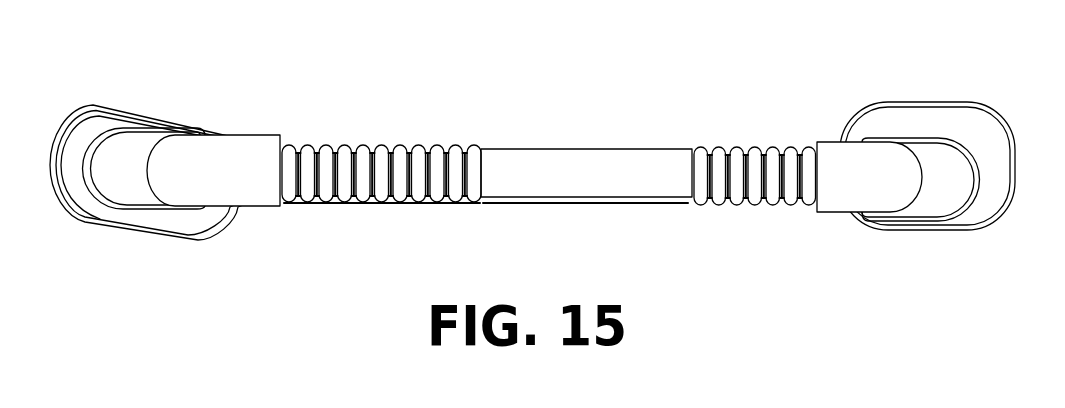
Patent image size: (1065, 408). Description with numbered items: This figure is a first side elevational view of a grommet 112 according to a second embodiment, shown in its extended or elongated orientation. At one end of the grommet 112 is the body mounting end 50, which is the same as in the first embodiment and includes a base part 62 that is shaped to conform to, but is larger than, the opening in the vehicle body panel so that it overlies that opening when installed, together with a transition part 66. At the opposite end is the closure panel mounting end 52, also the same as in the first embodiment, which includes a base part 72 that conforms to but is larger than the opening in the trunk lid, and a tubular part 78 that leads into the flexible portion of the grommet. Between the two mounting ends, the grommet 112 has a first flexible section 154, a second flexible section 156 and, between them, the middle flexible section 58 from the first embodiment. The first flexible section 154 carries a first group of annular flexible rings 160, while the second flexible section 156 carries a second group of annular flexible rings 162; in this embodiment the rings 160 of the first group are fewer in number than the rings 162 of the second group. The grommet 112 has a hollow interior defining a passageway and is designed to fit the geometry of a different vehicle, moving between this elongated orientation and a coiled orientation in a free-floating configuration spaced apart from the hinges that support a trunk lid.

The grommet 112 is at (546, 154).
The body mounting end 50 is at (885, 102).
The closure panel mounting end 52 is at (103, 105).
The middle flexible section 58 is at (533, 157).
The base part 62 is at (973, 118).
The transition part 66 is at (953, 188).
The base part 72 is at (102, 123).
The tubular part 78 is at (233, 147).
The first flexible section 154 is at (766, 163).
The second flexible section 156 is at (399, 123).
The annular flexible rings 160 is at (755, 148).
The annular flexible rings 162 is at (362, 148).